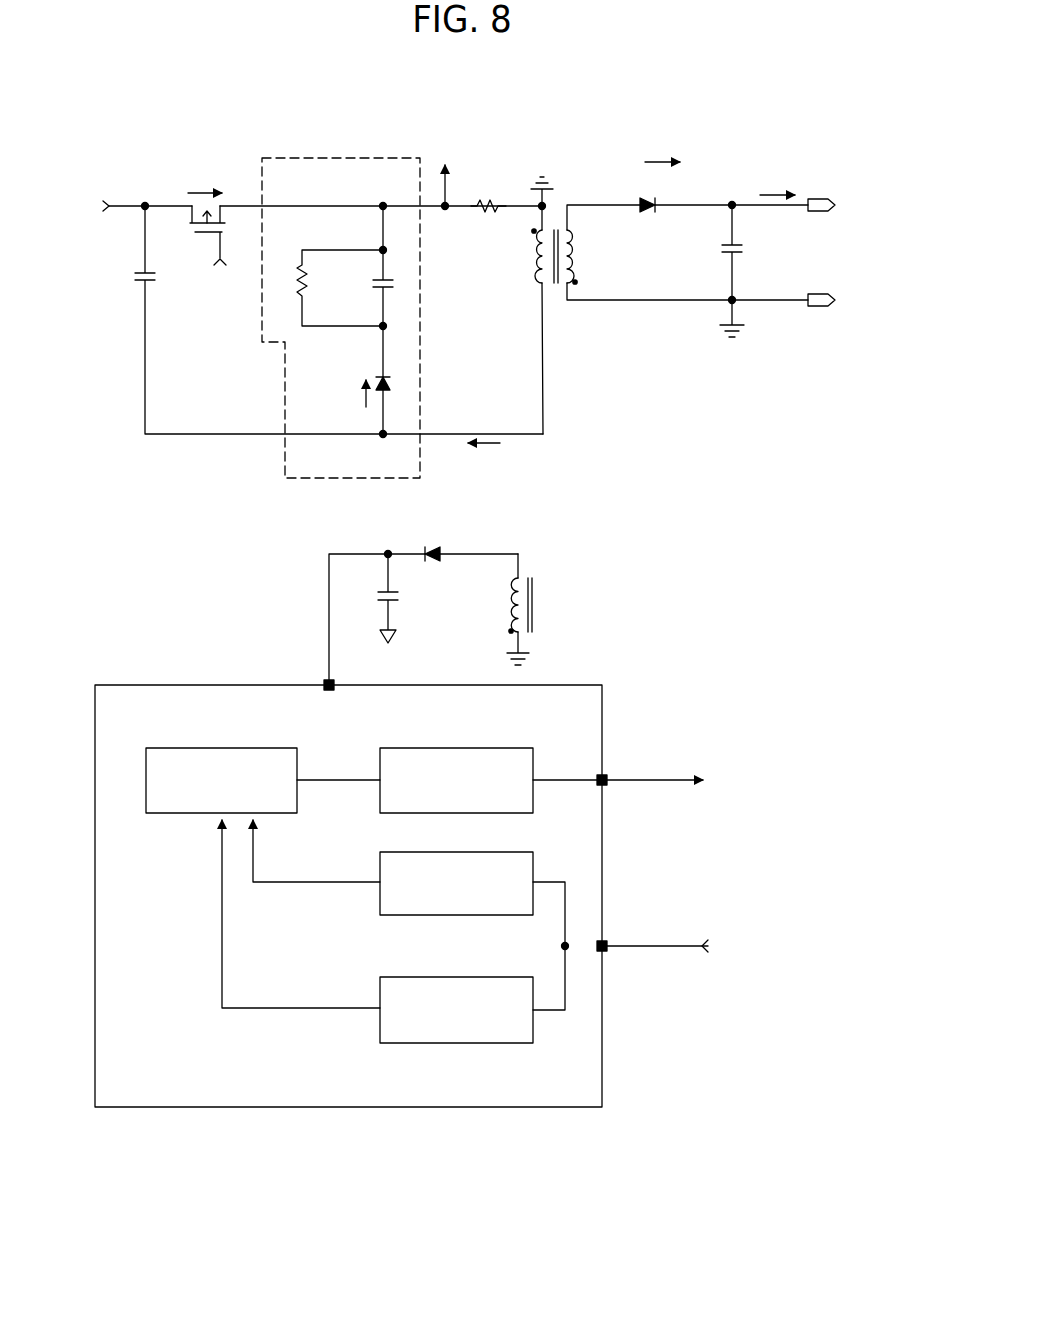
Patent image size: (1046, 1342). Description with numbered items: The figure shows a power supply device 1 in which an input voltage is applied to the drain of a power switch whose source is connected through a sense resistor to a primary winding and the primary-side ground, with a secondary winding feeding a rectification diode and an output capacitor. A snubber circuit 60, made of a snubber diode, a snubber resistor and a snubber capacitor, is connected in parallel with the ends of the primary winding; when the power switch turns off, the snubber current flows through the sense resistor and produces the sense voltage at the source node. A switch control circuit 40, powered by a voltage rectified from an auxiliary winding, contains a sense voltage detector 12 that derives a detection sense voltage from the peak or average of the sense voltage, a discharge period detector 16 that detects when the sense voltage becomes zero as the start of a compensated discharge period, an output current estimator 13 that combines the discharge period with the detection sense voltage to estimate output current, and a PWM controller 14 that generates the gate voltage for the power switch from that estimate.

The power supply device 1 is at (722, 122).
The snubber circuit 60 is at (340, 158).
The switch control circuit 40 is at (350, 1107).
The output current estimator 13 is at (222, 748).
The PWM controller 14 is at (457, 748).
The sense voltage detector 12 is at (456, 915).
The discharge period detector 16 is at (455, 1043).